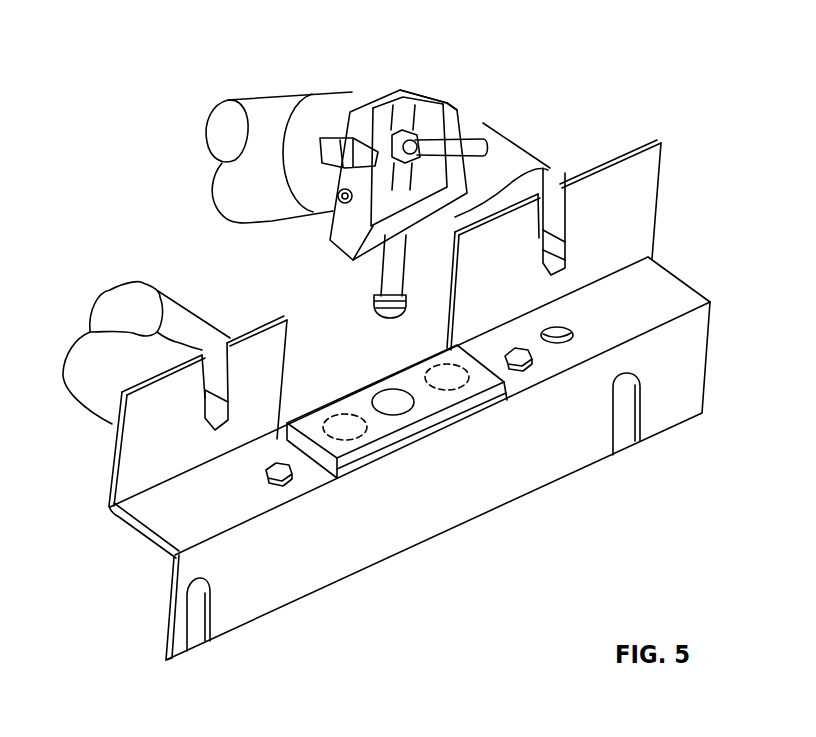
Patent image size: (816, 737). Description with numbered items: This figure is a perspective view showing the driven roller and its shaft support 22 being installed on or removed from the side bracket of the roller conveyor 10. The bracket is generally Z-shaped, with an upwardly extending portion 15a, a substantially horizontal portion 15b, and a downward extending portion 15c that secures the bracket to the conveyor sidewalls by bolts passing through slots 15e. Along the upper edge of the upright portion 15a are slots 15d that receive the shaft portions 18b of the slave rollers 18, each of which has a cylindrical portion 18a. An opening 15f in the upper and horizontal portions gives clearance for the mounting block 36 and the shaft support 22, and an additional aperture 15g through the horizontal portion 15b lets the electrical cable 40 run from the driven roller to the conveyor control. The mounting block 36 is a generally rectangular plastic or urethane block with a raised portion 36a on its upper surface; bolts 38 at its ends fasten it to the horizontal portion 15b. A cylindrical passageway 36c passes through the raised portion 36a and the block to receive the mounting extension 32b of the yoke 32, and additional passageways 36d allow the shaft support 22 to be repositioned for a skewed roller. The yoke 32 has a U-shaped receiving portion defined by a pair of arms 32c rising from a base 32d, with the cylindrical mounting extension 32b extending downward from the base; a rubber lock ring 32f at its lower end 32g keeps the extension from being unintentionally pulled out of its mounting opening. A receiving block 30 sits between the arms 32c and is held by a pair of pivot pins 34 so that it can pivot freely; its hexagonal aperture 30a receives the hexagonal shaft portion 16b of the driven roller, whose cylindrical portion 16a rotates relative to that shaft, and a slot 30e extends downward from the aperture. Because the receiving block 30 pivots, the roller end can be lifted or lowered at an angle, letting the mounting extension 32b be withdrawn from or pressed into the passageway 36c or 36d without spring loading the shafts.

The roller conveyor 10 is at (120, 203).
The upwardly extending portion 15a is at (130, 443).
The horizontal portion 15b is at (135, 525).
The downward extending portion 15c is at (377, 550).
The slots 15d is at (562, 211).
The slots 15e is at (227, 677).
The opening 15f is at (278, 433).
The aperture 15g is at (573, 328).
The cylindrical portion 16a is at (230, 97).
The shaft portion 16b is at (337, 133).
The slave rollers 18 is at (513, 156).
The cylindrical portion 18a is at (72, 362).
The shaft portion 18b is at (213, 428).
The shaft support 22 is at (450, 48).
The receiving block 30 is at (380, 92).
The aperture 30a is at (401, 128).
The slot 30e is at (401, 250).
The yoke 32 is at (333, 242).
The mounting extension 32b is at (382, 272).
The arms 32c is at (337, 148).
The base 32d is at (560, 170).
The lock ring 32f is at (407, 303).
The lower end 32g is at (380, 316).
The pivot pins 34 is at (335, 200).
The mounting block 36 is at (423, 420).
The raised portion 36a is at (430, 437).
The passageway 36c is at (390, 397).
The additional passageways 36d is at (382, 442).
The bolt 38 is at (265, 464).
The electrical cable 40 is at (485, 141).